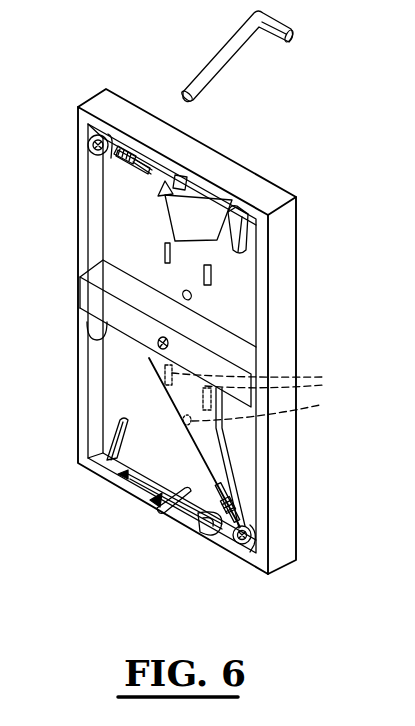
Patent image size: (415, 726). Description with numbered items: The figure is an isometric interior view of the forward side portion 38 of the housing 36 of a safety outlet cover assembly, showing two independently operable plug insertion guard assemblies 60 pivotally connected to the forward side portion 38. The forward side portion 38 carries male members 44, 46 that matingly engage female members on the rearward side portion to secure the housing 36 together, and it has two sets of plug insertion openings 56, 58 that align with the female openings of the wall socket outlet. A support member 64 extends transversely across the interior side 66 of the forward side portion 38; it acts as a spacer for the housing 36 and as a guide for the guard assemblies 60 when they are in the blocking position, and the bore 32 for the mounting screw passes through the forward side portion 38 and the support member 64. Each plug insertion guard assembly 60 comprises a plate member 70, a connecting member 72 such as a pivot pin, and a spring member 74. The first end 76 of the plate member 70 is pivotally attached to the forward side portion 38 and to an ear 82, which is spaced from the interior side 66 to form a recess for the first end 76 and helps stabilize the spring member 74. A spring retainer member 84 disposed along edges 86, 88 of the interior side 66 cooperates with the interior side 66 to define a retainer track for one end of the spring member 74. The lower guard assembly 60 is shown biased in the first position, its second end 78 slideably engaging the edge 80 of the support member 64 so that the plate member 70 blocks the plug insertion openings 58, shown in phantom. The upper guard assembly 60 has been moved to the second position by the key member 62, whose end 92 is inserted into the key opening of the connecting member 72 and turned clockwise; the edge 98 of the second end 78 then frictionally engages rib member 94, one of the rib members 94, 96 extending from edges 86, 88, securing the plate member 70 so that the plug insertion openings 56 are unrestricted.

The housing 36 is at (303, 116).
The forward side portion 38 is at (298, 250).
The male member 44 is at (208, 178).
The support member 64 is at (235, 356).
The bore 32 is at (157, 344).
The edge of support member 80 is at (98, 334).
The interior side 66 is at (246, 310).
The key member 62 is at (210, 58).
The end of key member 92 is at (194, 93).
The connecting member 72 is at (90, 138).
The ear 82 is at (110, 134).
The first end of plate member 76 is at (116, 156).
The spring member 74 is at (134, 168).
The spring retainer member 84 is at (152, 158).
The edge of interior side 86 is at (186, 176).
The plug insertion guard assembly 60 is at (158, 196).
The plate member 70 is at (180, 229).
The edge of interior side 88 is at (197, 440).
The male member 46 is at (166, 513).
The rib member 94 is at (246, 240).
The edge of second end 98 is at (250, 214).
The plug insertion openings 56 is at (183, 292).
The second end of plate member 78 is at (214, 242).
The rib member 96 is at (115, 445).
The plug insertion openings 58 is at (320, 386).